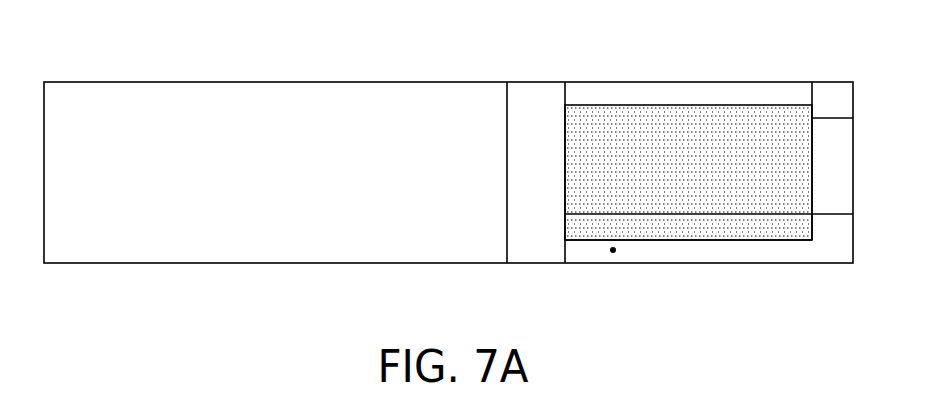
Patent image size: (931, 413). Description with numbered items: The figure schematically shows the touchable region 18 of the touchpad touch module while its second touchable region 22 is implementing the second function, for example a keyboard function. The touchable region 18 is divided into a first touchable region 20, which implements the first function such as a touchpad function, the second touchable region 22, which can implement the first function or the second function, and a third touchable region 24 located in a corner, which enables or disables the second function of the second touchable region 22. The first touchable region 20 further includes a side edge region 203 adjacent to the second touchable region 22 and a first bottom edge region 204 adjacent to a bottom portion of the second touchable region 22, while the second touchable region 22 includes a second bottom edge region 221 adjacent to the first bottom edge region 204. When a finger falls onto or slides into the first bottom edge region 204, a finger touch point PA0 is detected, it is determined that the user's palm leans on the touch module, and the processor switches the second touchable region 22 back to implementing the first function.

The touchable region 18 is at (360, 82).
The first touchable region 20 is at (440, 95).
The second touchable region 22 is at (738, 121).
The third touchable region 24 is at (827, 95).
The side edge region 203 is at (541, 250).
The first bottom edge region 204 is at (655, 250).
The second bottom edge region 221 is at (745, 230).
The finger touch point PA0 is at (612, 253).